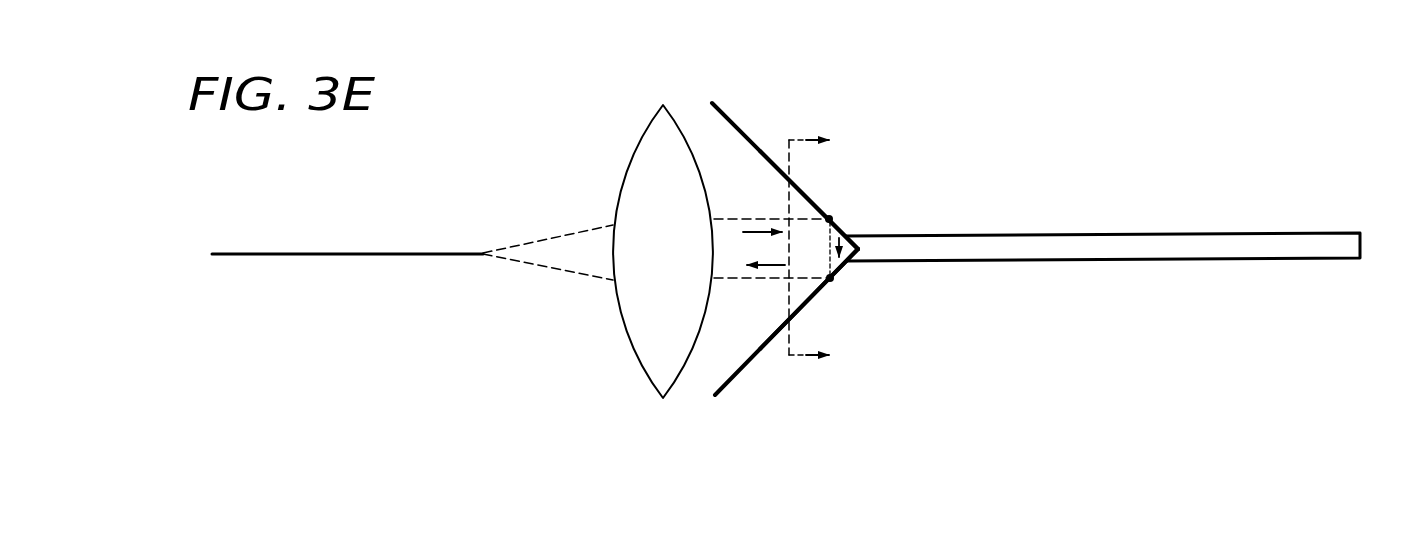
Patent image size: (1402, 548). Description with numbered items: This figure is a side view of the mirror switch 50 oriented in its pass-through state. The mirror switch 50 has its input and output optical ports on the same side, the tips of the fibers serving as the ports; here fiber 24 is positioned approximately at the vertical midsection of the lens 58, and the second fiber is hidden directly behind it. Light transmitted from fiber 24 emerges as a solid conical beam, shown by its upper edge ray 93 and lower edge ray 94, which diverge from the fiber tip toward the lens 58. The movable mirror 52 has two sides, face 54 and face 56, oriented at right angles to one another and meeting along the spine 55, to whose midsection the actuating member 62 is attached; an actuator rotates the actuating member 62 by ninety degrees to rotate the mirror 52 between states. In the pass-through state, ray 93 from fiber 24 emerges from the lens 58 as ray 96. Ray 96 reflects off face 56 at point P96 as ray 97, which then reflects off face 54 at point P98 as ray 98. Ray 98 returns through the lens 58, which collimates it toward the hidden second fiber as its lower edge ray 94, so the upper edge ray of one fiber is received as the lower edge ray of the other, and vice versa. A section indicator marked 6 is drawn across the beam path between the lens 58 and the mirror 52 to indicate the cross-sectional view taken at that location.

The fiber 24 is at (296, 258).
The upper edge ray 93 is at (567, 232).
The lower edge ray 94 is at (543, 267).
The lens 58 is at (679, 268).
The ray 96 is at (739, 219).
The ray 98 is at (772, 279).
The section line 6- 6 is at (818, 247).
The ray 97 is at (830, 240).
The mirror face 56 is at (756, 146).
The mirror face 54 is at (729, 382).
The movable mirror 52 is at (803, 190).
The reflection point P96 is at (832, 218).
The reflection point P98 is at (832, 281).
The actuating member 62 is at (990, 249).
The spine 55 is at (858, 249).
The mirror switch 50 is at (995, 158).